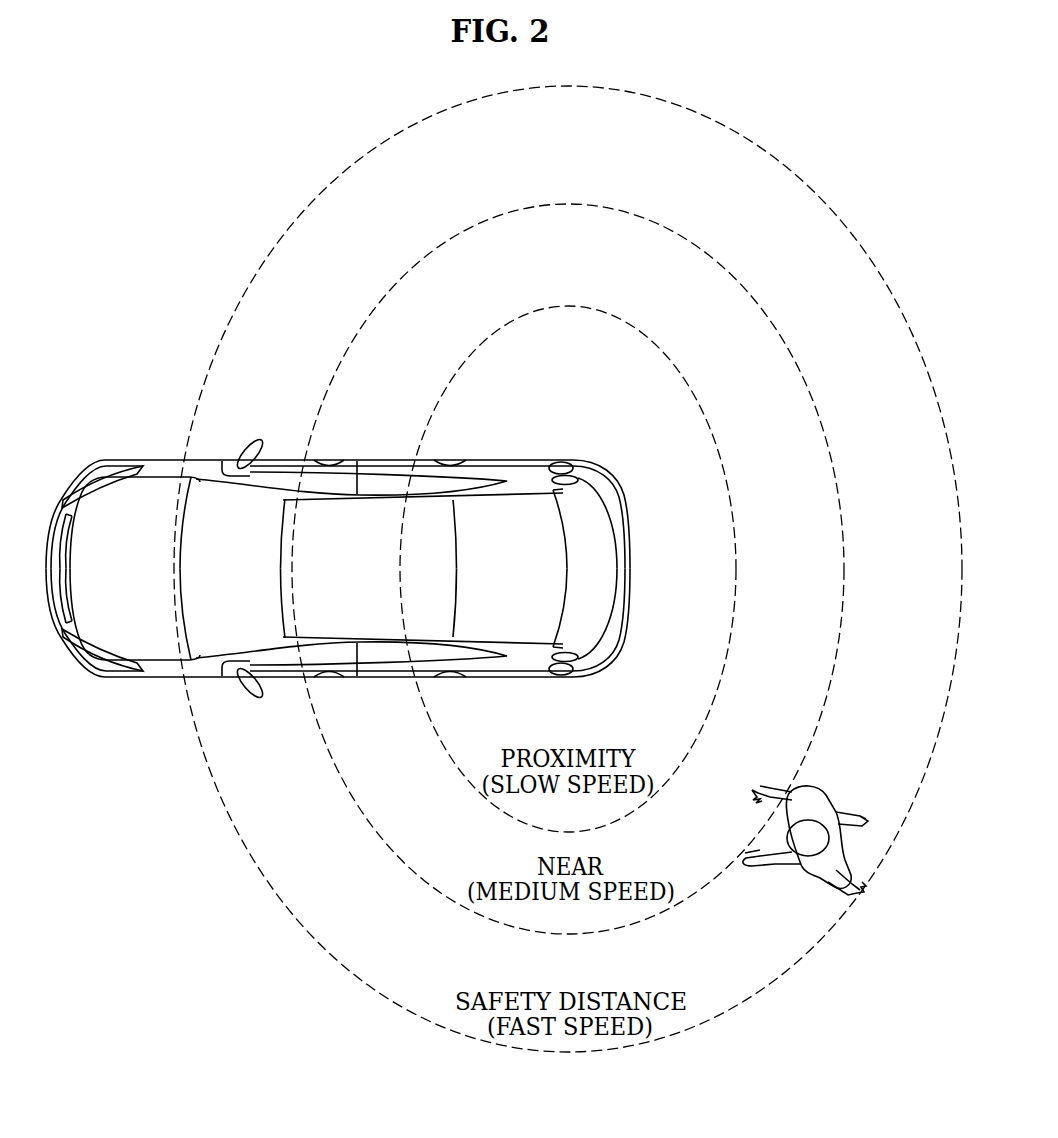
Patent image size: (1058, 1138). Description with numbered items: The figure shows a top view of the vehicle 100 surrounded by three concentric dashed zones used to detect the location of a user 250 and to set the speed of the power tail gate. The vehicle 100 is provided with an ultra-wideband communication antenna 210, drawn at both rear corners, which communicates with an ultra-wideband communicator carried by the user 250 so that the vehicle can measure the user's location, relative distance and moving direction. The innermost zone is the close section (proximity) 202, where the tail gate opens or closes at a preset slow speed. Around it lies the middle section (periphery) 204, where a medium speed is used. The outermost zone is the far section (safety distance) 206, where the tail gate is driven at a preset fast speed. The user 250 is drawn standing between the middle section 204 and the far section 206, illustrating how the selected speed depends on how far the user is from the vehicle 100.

The vehicle 100 is at (162, 673).
The close section (proximity) 202 is at (677, 362).
The middle section (periphery) 204 is at (793, 363).
The far section (safety distance) 206 is at (880, 272).
The ultra-wideband communication antenna 210 is at (567, 477).
The user 250 is at (830, 815).